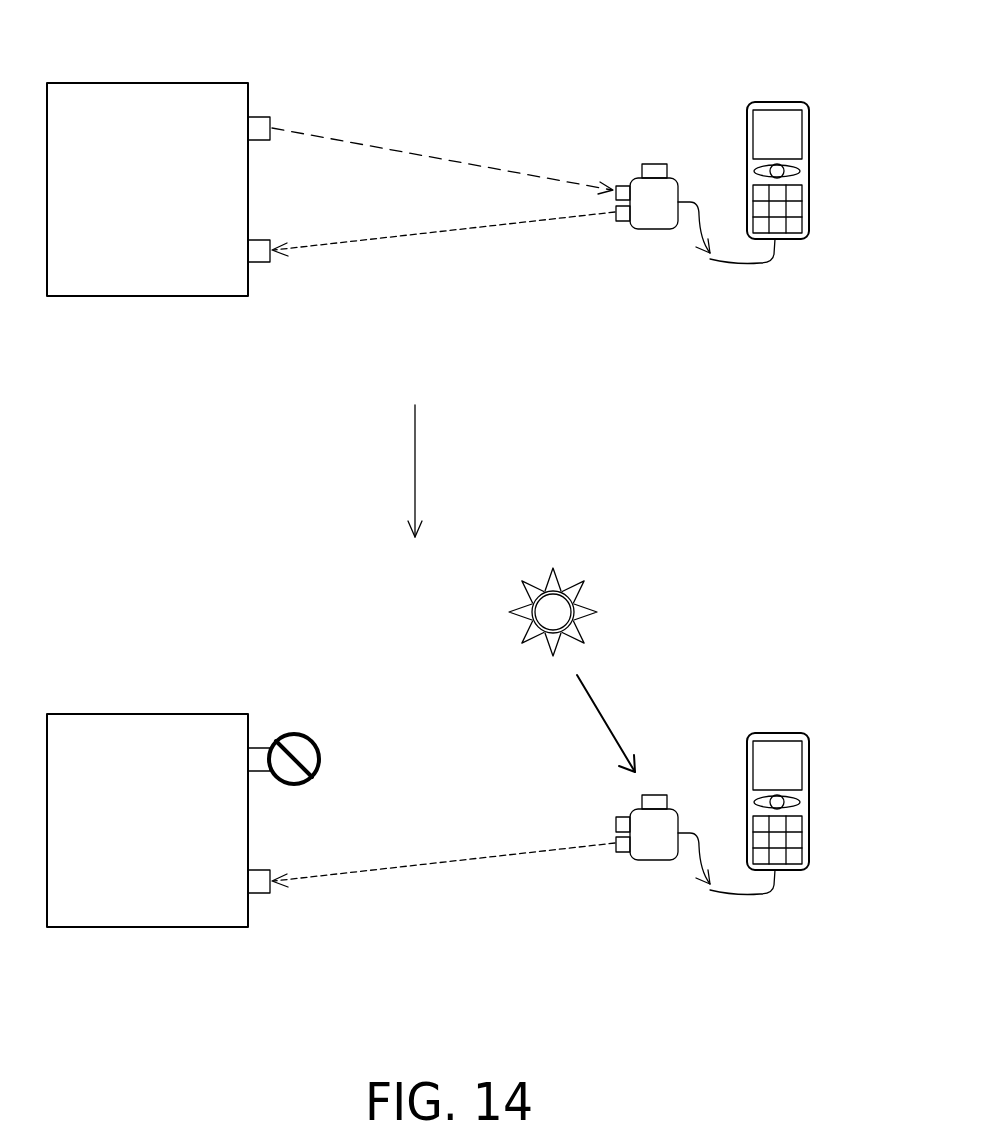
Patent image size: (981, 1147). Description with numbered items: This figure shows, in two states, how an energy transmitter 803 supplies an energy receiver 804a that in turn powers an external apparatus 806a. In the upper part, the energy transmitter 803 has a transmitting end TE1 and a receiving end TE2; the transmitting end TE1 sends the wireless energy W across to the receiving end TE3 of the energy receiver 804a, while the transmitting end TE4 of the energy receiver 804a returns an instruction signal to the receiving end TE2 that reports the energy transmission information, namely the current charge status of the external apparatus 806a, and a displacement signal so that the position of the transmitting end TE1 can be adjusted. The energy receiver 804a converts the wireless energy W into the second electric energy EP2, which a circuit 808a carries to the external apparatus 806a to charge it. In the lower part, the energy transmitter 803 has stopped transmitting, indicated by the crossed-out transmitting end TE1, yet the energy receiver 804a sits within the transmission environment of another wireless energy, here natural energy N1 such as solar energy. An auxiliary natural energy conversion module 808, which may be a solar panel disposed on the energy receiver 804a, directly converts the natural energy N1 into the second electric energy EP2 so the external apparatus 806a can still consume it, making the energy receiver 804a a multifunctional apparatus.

The energy transmitter 803 is at (140, 112).
The transmitting end TE1 is at (257, 126).
The receiving end TE2 is at (258, 255).
The wireless energy W is at (468, 162).
The receiving end TE3 is at (622, 188).
The transmitting end TE4 is at (620, 226).
The energy receiver 804a is at (653, 230).
The auxiliary natural energy conversion module 808 is at (655, 165).
The second electric energy EP2 is at (708, 531).
The circuit 808a is at (727, 264).
The external apparatus 806a is at (810, 146).
The natural energy N1 is at (572, 670).